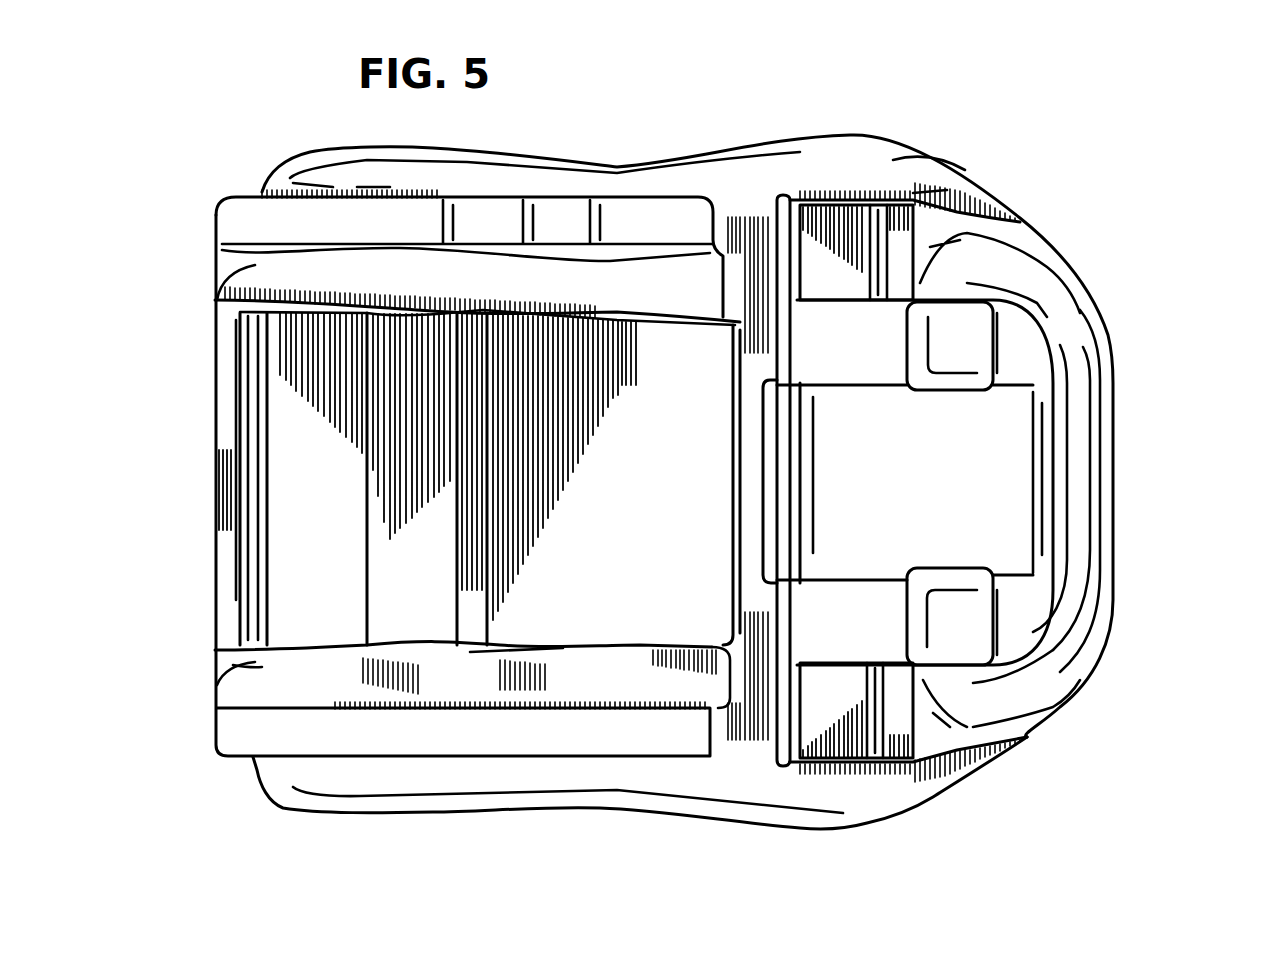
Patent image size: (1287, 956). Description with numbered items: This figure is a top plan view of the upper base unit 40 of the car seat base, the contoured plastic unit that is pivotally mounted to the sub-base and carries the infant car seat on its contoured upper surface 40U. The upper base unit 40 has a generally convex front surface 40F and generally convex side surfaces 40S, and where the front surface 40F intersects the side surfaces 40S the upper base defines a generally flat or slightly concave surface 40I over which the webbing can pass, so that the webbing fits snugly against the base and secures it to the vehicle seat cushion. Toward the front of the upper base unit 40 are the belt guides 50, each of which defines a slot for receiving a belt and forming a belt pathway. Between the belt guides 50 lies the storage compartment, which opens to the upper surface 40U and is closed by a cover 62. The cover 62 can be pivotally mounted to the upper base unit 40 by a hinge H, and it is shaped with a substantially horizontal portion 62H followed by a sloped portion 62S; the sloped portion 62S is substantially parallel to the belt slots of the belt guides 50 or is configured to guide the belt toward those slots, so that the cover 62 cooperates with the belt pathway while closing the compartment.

The upper base unit 40 is at (640, 277).
The side surfaces 40S is at (800, 172).
The upper surface 40U is at (641, 510).
The front surface 40F is at (1113, 447).
The flat or slightly concave surface 40I is at (1020, 222).
The belt guides 50 is at (867, 203).
The cover 62 is at (1013, 390).
The sloped portion 62S is at (783, 533).
The horizontal portion 62H is at (852, 565).
The hinge H is at (776, 372).